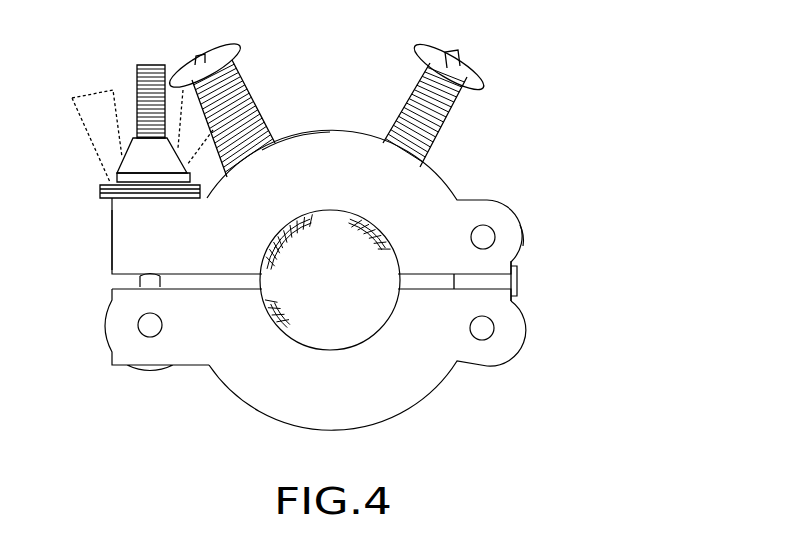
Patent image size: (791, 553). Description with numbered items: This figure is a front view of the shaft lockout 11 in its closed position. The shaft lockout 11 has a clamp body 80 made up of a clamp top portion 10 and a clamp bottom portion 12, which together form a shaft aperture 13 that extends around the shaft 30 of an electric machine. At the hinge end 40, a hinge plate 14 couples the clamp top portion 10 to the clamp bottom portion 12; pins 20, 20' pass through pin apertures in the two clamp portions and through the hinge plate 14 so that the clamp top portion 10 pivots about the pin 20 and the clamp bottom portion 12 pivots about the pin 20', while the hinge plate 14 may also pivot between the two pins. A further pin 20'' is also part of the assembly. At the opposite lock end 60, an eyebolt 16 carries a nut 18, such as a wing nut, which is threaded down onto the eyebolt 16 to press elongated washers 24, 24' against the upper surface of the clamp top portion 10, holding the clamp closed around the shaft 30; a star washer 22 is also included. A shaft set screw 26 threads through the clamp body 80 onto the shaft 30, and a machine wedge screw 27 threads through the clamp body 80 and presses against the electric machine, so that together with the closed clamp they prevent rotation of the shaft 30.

The clamp top portion 10 is at (324, 147).
The shaft lockout 11 is at (453, 180).
The clamp bottom portion 12 is at (327, 400).
The shaft aperture 13 is at (305, 320).
The hinge plate 14 is at (515, 285).
The eyebolt 16 is at (150, 65).
The nut 18 is at (97, 100).
The pin 20 is at (529, 219).
The pin 20' is at (531, 351).
The pin 20'' is at (125, 371).
The star washer 22 is at (110, 312).
The elongated washer 24 is at (123, 172).
The elongated washer 24' is at (120, 202).
The shaft set screw 26 is at (203, 43).
The machine wedge screw 27 is at (446, 48).
The shaft 30 is at (284, 269).
The hinge end 40 is at (505, 237).
The lock end 60 is at (110, 241).
The clamp body 80 is at (292, 157).